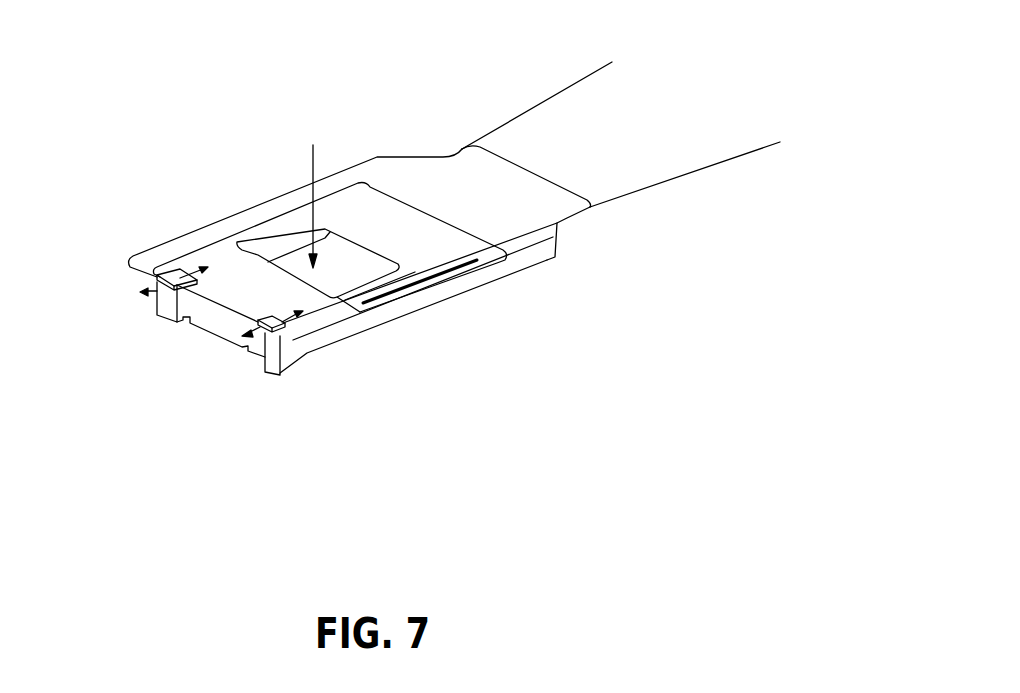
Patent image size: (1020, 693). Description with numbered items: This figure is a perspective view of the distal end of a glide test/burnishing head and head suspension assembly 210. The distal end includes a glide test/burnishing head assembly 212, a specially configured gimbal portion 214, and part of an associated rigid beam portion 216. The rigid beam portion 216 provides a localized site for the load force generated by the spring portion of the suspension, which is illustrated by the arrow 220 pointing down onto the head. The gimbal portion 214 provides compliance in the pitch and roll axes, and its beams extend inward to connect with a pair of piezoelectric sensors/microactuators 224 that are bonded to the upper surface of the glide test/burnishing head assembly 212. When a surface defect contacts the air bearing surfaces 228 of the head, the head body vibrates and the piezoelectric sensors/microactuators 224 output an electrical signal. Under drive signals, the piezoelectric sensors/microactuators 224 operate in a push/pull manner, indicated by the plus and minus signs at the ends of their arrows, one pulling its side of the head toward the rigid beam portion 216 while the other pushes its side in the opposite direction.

The glide test/burnishing head and head suspension assembly 210 is at (155, 122).
The glide test/burnishing head assembly 212 is at (290, 357).
The gimbal portion 214 is at (510, 225).
The rigid beam portion 216 is at (649, 142).
The arrow 220 is at (325, 229).
The piezoelectric sensors/microactuators 224 is at (267, 333).
The air bearing surfaces 228 is at (160, 320).